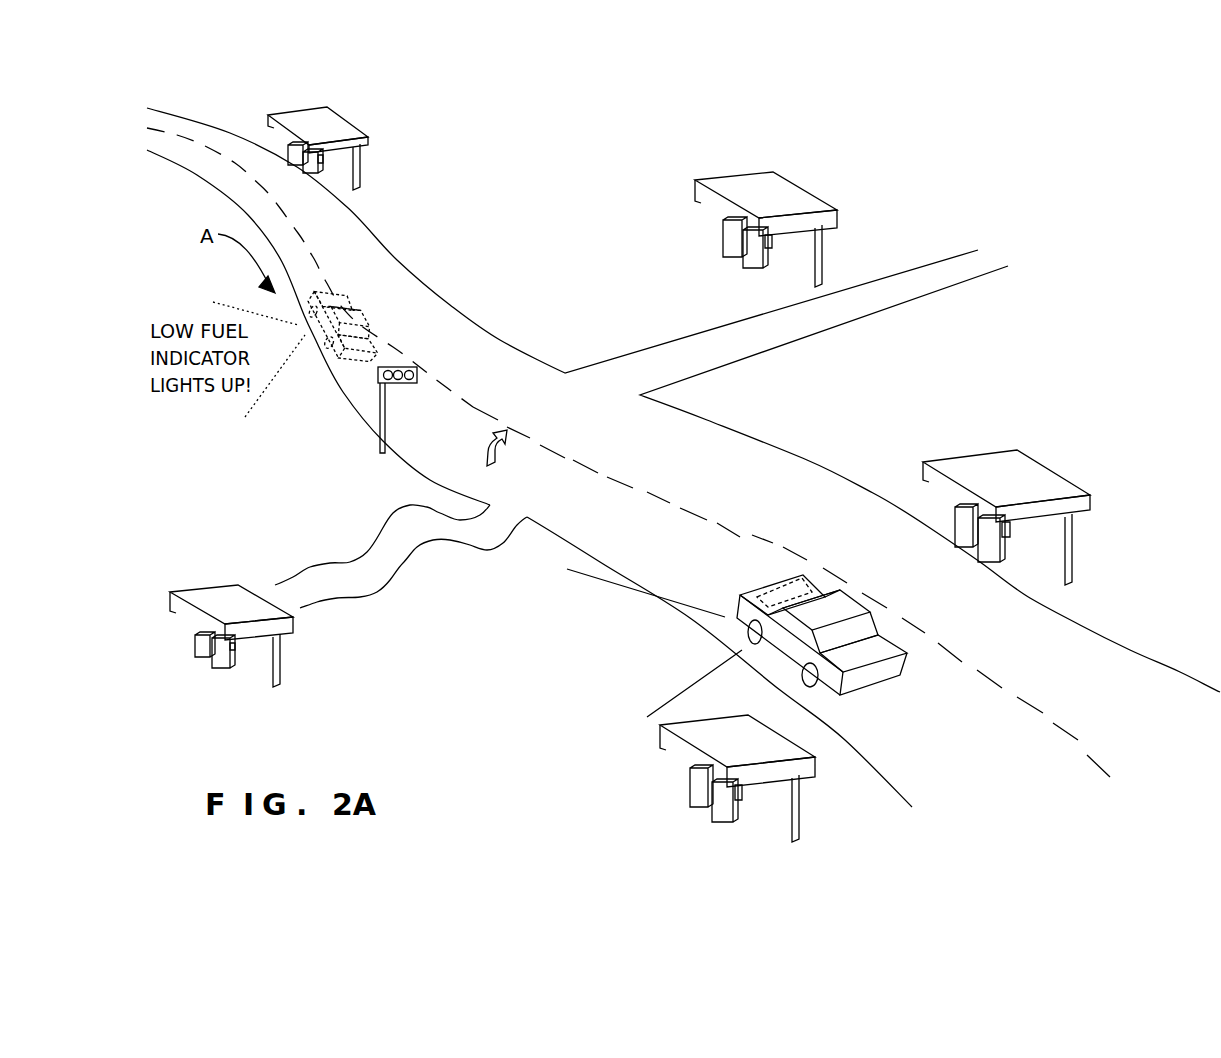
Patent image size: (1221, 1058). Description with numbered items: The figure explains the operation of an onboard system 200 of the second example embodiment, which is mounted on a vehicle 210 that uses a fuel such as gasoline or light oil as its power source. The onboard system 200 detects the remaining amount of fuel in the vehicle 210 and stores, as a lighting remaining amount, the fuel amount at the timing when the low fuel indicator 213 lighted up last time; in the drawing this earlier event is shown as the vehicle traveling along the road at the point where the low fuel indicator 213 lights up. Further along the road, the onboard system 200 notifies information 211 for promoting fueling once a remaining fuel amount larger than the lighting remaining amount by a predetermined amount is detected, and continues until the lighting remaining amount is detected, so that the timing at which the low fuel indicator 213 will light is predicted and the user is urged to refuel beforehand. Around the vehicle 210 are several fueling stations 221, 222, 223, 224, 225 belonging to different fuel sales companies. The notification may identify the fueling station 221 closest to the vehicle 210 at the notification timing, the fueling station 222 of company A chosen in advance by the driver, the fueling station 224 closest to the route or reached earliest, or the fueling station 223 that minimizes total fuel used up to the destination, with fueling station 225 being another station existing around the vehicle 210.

The onboard system 200 is at (768, 595).
The vehicle 210 is at (877, 683).
The information for promoting fueling 211 is at (558, 672).
The low fuel indicator 213 is at (336, 298).
The fueling station 221 is at (815, 768).
The fueling station 222 is at (1058, 475).
The fueling station 223 is at (798, 190).
The fueling station 224 is at (218, 588).
The fueling station 225 is at (368, 138).